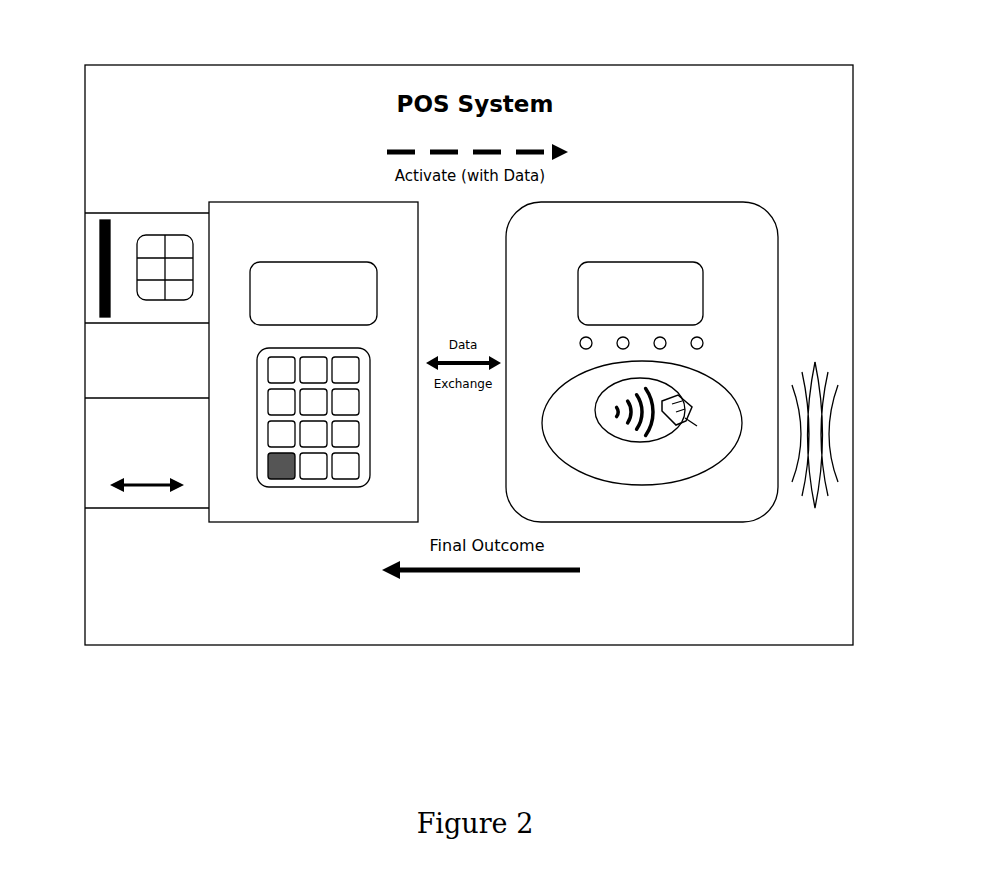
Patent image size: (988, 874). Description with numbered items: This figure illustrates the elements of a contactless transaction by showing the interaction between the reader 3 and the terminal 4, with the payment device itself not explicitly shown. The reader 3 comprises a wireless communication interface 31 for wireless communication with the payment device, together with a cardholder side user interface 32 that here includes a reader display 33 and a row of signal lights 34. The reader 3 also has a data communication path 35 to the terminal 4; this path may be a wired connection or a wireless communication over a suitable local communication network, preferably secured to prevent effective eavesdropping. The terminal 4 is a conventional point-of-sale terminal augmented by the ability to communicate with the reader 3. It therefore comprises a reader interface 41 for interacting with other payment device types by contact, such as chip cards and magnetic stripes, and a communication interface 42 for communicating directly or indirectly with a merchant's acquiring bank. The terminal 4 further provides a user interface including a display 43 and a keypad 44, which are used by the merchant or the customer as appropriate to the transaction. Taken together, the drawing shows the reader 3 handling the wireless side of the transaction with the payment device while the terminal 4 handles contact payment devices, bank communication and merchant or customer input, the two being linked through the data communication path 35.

The reader 3 is at (735, 224).
The terminal 4 is at (228, 204).
The wireless communication interface 31 is at (663, 495).
The cardholder side user interface 32 is at (763, 316).
The reader display 33 is at (723, 284).
The signal lights 34 is at (726, 351).
The data communication path 35 is at (447, 370).
The reader interface 41 is at (186, 298).
The communication interface 42 is at (114, 509).
The display 43 is at (272, 245).
The keypad 44 is at (286, 490).